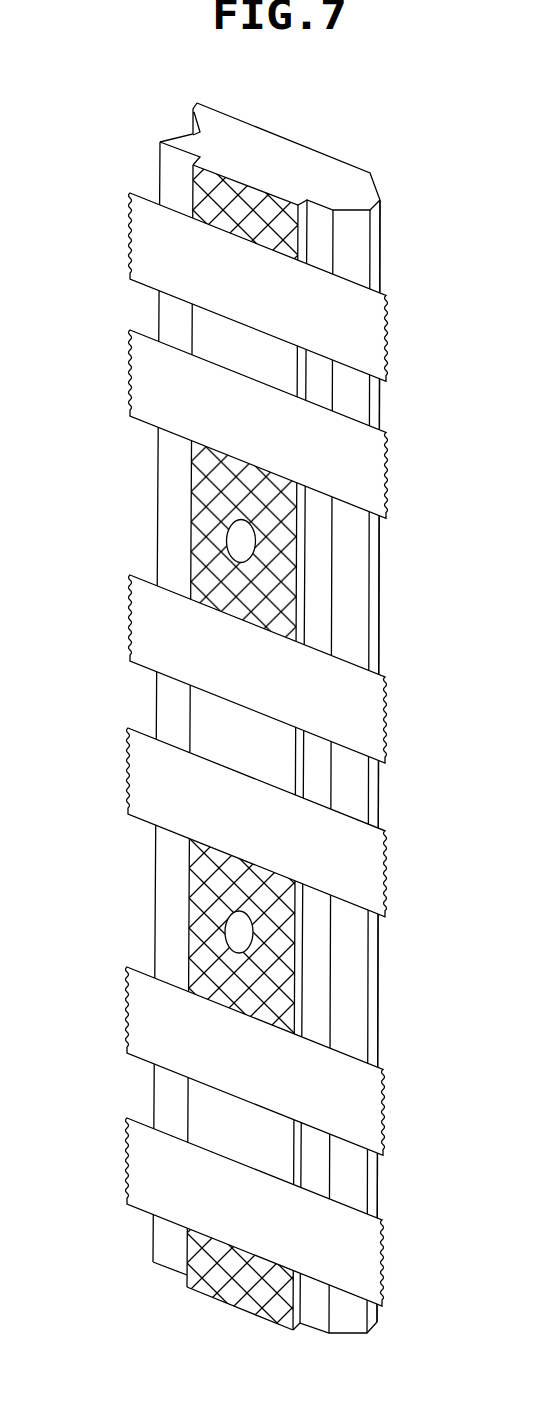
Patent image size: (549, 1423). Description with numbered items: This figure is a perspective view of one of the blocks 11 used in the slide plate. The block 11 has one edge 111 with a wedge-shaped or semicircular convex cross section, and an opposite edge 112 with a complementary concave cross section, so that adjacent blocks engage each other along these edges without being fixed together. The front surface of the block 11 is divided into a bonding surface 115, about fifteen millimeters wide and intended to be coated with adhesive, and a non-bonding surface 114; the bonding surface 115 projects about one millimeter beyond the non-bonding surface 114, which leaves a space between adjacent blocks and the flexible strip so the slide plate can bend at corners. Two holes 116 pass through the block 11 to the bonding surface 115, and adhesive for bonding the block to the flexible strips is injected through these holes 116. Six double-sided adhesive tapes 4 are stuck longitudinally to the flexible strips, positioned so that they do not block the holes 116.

The double-sided adhesive tape 4 is at (375, 350).
The block 11 is at (317, 163).
The edge 111 is at (378, 256).
The other edge 112 is at (174, 133).
The non-bonding surface 114 is at (164, 168).
The bonding surface 115 is at (222, 190).
The holes 116 is at (240, 543).